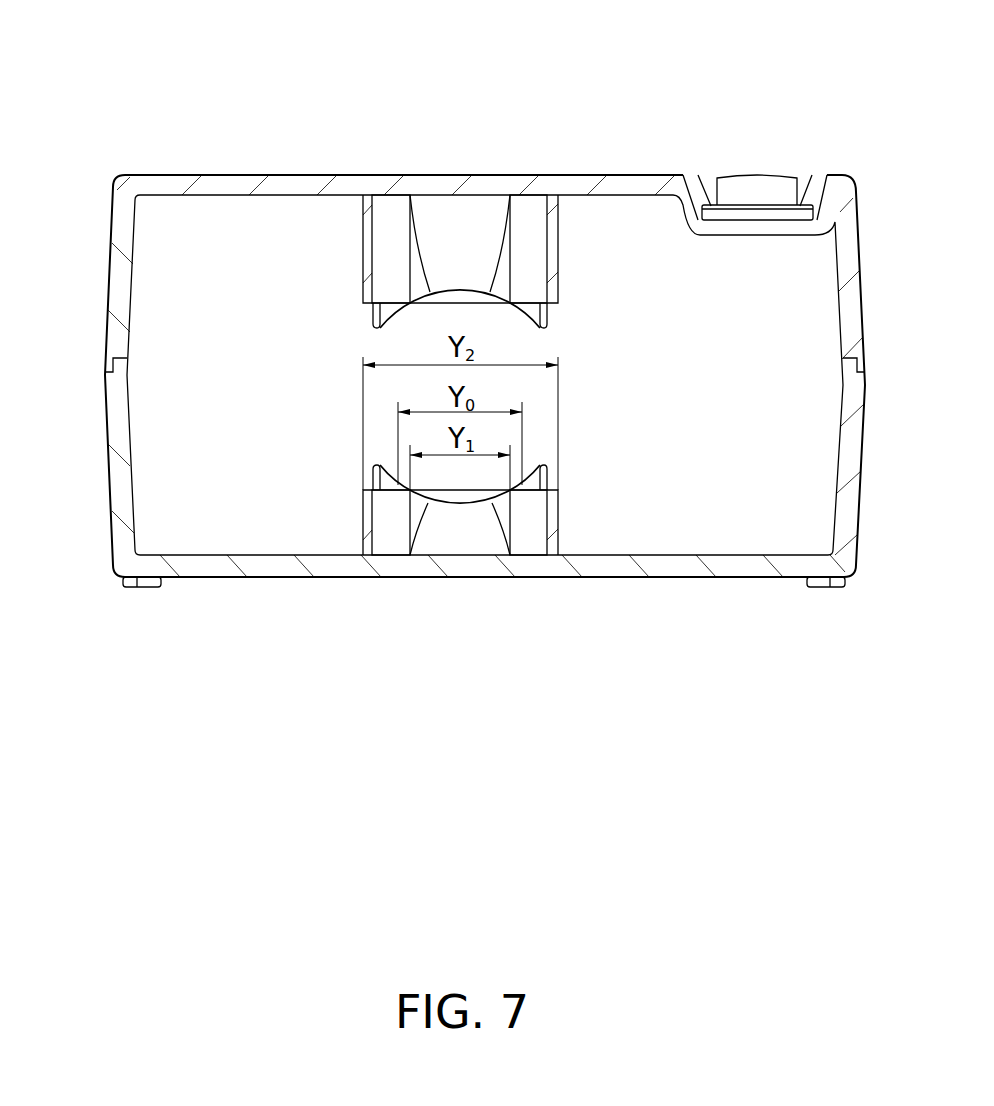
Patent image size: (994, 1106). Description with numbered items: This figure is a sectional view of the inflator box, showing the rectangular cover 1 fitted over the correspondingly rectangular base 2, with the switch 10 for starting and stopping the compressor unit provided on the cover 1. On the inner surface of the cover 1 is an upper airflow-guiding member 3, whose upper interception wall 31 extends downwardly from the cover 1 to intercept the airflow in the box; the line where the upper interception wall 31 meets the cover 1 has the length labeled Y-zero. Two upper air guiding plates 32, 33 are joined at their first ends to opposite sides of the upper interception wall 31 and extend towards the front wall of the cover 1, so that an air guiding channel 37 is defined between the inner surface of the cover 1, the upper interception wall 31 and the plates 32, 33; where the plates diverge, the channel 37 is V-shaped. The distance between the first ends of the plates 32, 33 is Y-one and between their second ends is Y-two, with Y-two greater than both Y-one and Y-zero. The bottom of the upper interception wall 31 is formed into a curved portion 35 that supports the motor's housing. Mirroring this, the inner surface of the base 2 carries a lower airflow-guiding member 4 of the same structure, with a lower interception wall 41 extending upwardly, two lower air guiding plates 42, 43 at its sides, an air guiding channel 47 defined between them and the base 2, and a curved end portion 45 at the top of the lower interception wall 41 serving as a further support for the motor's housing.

The cover 1 is at (643, 193).
The base 2 is at (730, 568).
The upper airflow-guiding member 3 is at (383, 312).
The lower airflow-guiding member 4 is at (383, 480).
The switch 10 is at (767, 197).
The upper interception wall 31 is at (447, 222).
The upper air guiding plate 32 is at (388, 218).
The upper air guiding plate 33 is at (535, 220).
The curved portion 35 is at (390, 323).
The air guiding channel 37 is at (470, 232).
The lower interception wall 41 is at (463, 542).
The lower air guiding plate 42 is at (392, 532).
The lower air guiding plate 43 is at (532, 537).
The curved end portion 45 is at (390, 488).
The air guiding channel 47 is at (470, 522).